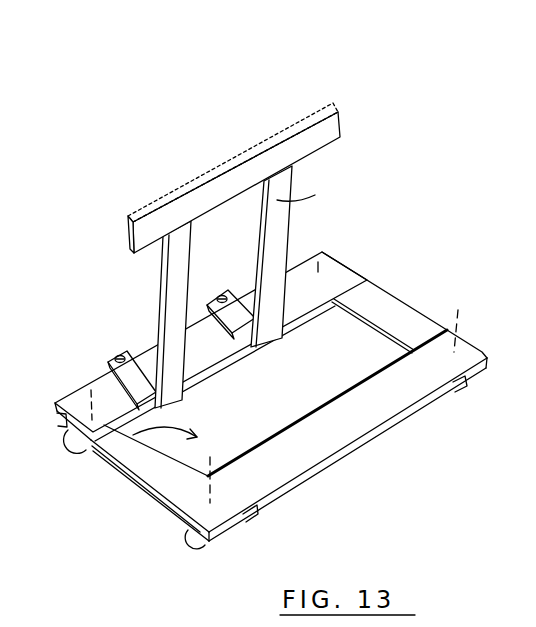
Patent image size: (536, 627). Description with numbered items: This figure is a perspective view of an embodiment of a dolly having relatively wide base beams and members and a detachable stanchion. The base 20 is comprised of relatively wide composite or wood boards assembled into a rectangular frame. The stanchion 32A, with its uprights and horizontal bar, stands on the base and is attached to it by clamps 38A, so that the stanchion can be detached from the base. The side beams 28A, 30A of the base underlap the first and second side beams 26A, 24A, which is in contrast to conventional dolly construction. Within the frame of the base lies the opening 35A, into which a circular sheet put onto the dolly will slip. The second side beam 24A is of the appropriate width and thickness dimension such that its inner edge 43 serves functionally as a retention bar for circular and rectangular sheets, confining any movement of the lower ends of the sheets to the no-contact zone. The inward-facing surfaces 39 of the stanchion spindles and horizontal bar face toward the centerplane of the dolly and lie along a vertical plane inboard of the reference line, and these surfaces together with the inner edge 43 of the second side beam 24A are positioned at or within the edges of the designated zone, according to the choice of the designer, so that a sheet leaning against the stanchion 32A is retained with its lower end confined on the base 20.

The base 20 is at (250, 397).
The second side beam 24A is at (355, 456).
The first side beam 26A is at (203, 360).
The side beam 28A is at (343, 273).
The side beam 30A is at (126, 478).
The stanchion 32A is at (353, 122).
The opening 35A is at (147, 432).
The clamps 38A is at (131, 360).
The inward-facing surfaces 39 is at (297, 148).
The inner edge 43 is at (315, 408).